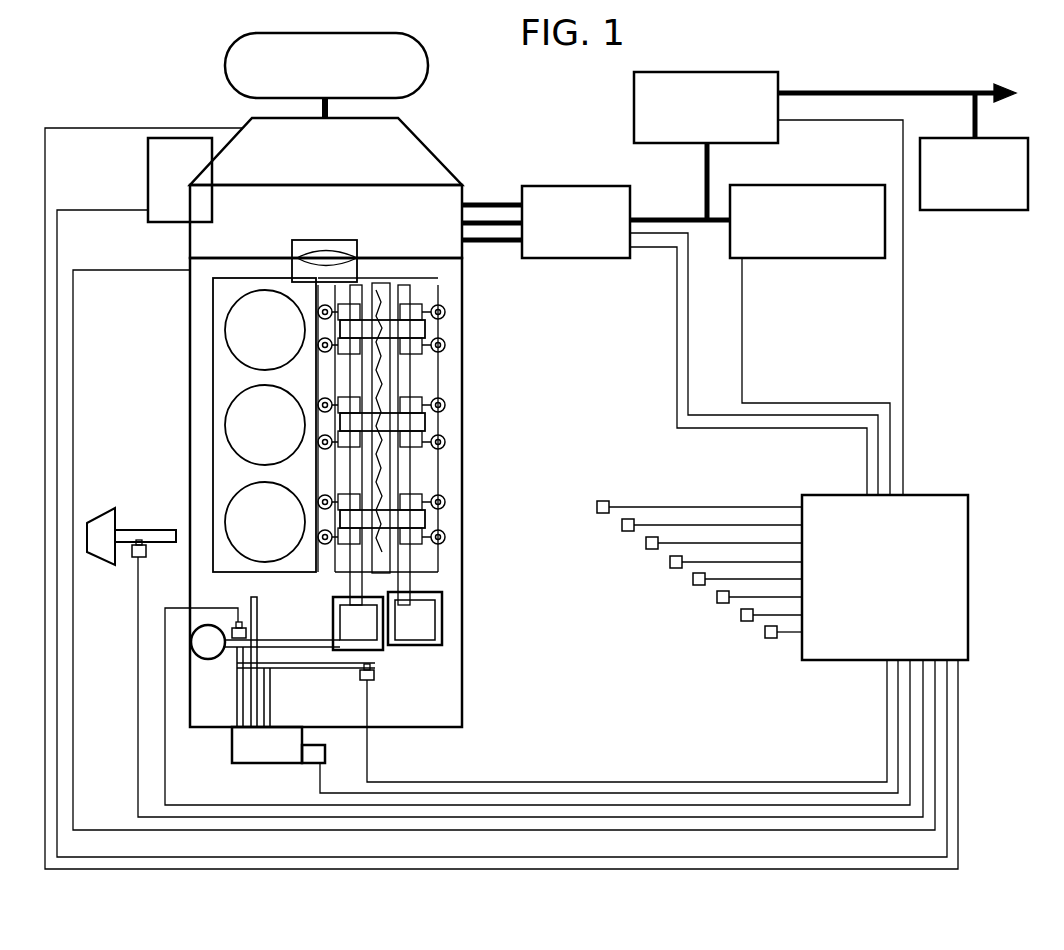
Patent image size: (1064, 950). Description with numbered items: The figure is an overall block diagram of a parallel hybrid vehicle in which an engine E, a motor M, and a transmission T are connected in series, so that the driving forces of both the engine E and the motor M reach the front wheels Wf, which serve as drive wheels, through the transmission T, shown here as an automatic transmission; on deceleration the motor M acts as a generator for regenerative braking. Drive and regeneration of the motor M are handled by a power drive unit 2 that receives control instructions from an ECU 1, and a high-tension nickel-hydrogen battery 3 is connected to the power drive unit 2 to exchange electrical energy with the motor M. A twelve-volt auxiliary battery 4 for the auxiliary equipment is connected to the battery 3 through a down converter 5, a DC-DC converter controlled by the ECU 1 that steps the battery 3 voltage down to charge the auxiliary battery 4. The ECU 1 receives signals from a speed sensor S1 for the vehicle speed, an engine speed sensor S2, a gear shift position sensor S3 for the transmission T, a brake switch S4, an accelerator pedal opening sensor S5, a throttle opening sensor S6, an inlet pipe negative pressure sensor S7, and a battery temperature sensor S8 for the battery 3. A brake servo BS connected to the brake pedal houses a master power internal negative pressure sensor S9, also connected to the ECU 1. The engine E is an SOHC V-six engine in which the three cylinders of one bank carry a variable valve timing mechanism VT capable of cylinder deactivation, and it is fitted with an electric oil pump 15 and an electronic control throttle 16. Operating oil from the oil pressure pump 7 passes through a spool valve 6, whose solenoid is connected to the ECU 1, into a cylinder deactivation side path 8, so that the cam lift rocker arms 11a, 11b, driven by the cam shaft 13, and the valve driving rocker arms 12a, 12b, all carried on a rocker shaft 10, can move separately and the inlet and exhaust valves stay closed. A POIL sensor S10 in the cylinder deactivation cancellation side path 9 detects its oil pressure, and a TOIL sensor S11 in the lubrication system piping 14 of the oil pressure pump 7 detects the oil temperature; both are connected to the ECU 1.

The ECU 1 is at (968, 580).
The power drive unit 2 is at (577, 186).
The nickel-hydrogen battery 3 is at (822, 185).
The auxiliary battery 4 is at (982, 210).
The down converter 5 is at (634, 95).
The spool valve 6 is at (232, 745).
The oil pressure pump 7 is at (210, 660).
The cylinder deactivation side path 8 is at (380, 625).
The cylinder deactivation cancellation side path 9 is at (348, 658).
The rocker shaft 10 is at (352, 585).
The cam lift rocker arm 11a is at (345, 325).
The cam lift rocker arm 11b is at (445, 323).
The valve driving rocker arm 12a is at (318, 310).
The valve driving rocker arm 12b is at (445, 308).
The cam shaft 13 is at (378, 300).
The lubrication system piping 14 is at (258, 612).
The electric oil pump 15 is at (148, 168).
The electronic control throttle 16 is at (292, 256).
The engine E is at (190, 410).
The motor M is at (440, 188).
The transmission T is at (412, 133).
The front wheels Wf is at (225, 65).
The variable valve timing mechanism VT is at (436, 291).
The brake servo BS is at (97, 520).
The speed sensor S1 is at (603, 500).
The engine speed sensor S2 is at (622, 525).
The gear shift position sensor S3 is at (646, 543).
The brake switch S4 is at (670, 562).
The accelerator pedal opening sensor S5 is at (695, 585).
The throttle opening sensor S6 is at (723, 603).
The inlet pipe negative pressure sensor S7 is at (748, 621).
The battery temperature sensor S8 is at (773, 638).
The master power internal negative pressure sensor S9 is at (132, 560).
The POIL sensor S10 is at (375, 680).
The TOIL sensor S11 is at (235, 628).